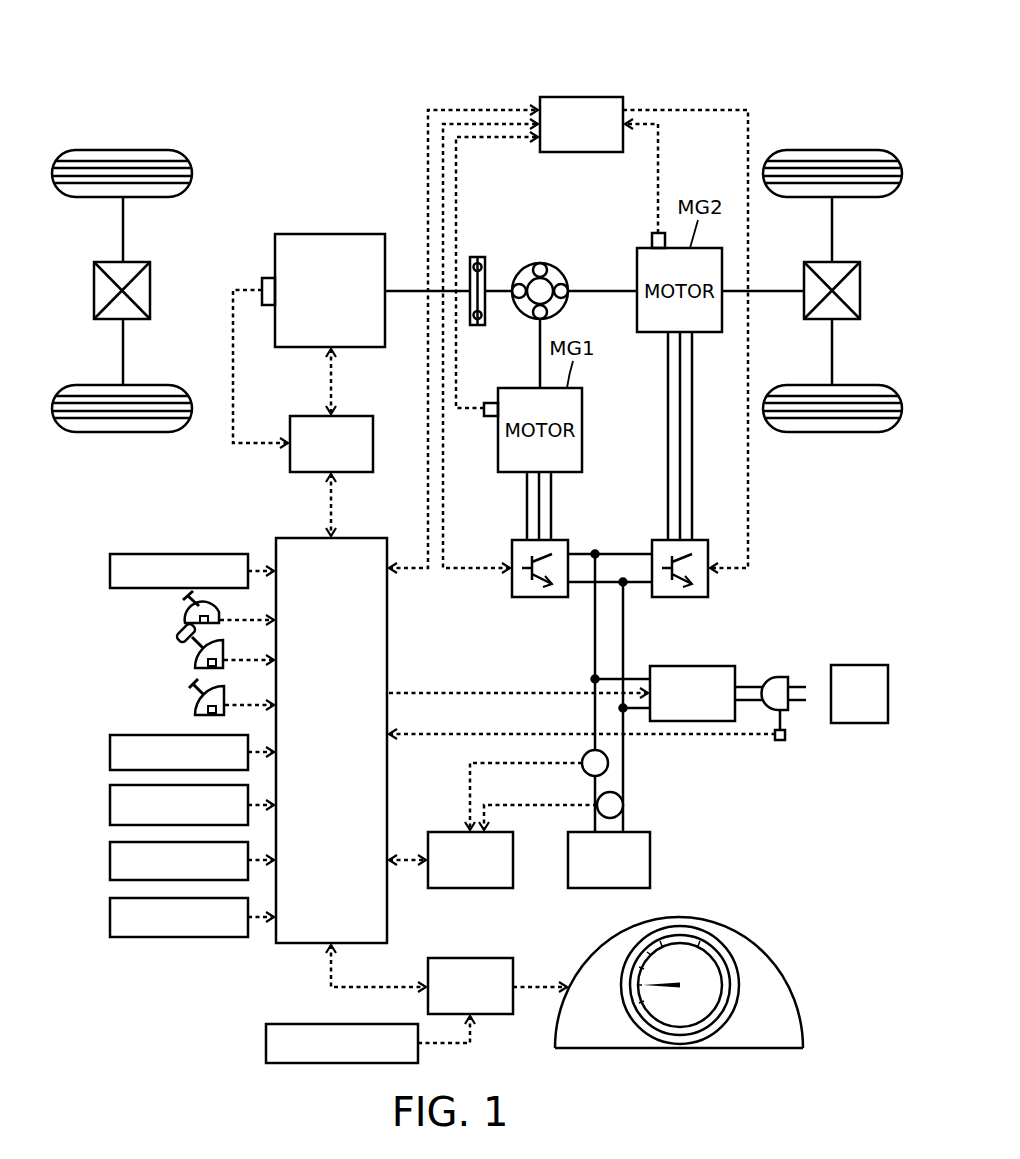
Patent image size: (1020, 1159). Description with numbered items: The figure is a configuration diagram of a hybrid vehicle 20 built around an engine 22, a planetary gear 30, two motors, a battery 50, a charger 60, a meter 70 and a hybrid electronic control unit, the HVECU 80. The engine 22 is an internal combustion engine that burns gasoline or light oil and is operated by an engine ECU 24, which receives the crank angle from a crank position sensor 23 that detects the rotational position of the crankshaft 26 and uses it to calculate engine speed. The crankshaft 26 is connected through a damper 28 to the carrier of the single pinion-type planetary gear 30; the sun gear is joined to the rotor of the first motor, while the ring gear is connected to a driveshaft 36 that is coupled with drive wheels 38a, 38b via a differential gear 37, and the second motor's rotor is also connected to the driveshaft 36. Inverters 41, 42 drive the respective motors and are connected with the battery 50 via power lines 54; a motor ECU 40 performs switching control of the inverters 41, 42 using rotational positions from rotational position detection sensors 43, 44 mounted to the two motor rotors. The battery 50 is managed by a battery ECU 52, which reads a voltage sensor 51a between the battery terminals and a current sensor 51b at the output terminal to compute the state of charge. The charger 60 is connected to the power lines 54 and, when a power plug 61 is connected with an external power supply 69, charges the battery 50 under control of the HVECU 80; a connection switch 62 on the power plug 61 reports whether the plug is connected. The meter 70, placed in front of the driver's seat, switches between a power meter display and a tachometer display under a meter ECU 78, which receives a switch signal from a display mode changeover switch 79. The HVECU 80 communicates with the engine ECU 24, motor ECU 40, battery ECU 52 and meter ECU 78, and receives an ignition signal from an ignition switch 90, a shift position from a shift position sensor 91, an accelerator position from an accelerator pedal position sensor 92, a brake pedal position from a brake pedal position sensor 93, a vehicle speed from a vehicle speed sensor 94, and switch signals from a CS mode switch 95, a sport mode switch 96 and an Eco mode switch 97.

The hybrid vehicle 20 is at (719, 66).
The engine 22 is at (320, 234).
The crank position sensor 23 is at (268, 278).
The engine ECU 24 is at (358, 416).
The crankshaft 26 is at (400, 291).
The damper 28 is at (477, 257).
The planetary gear 30 is at (538, 263).
The driveshaft 36 is at (777, 291).
The differential gear 37 is at (843, 262).
The drive wheel 38a is at (831, 150).
The drive wheel 38b is at (830, 432).
The motor ECU 40 is at (595, 97).
The inverter 41 is at (558, 540).
The inverter 42 is at (703, 540).
The rotational position detection sensor 43 is at (490, 403).
The rotational position detection sensor 44 is at (656, 233).
The battery 50 is at (650, 860).
The voltage sensor 51a is at (623, 805).
The current sensor 51b is at (608, 763).
The battery ECU 52 is at (456, 831).
The power lines 54 is at (614, 578).
The charger 60 is at (692, 666).
The power plug 61 is at (784, 677).
The connection switch 62 is at (781, 741).
The external power supply 69 is at (858, 665).
The meter 70 is at (765, 951).
The meter ECU 78 is at (456, 958).
The display mode changeover switch 79 is at (266, 1043).
The HVECU 80 is at (358, 538).
The ignition switch 90 is at (110, 570).
The shift position sensor 91 is at (185, 617).
The accelerator pedal position sensor 92 is at (195, 663).
The brake pedal position sensor 93 is at (195, 707).
The vehicle speed sensor 94 is at (110, 751).
The CS mode switch 95 is at (110, 804).
The sport mode switch 96 is at (110, 859).
The Eco mode switch 97 is at (110, 916).